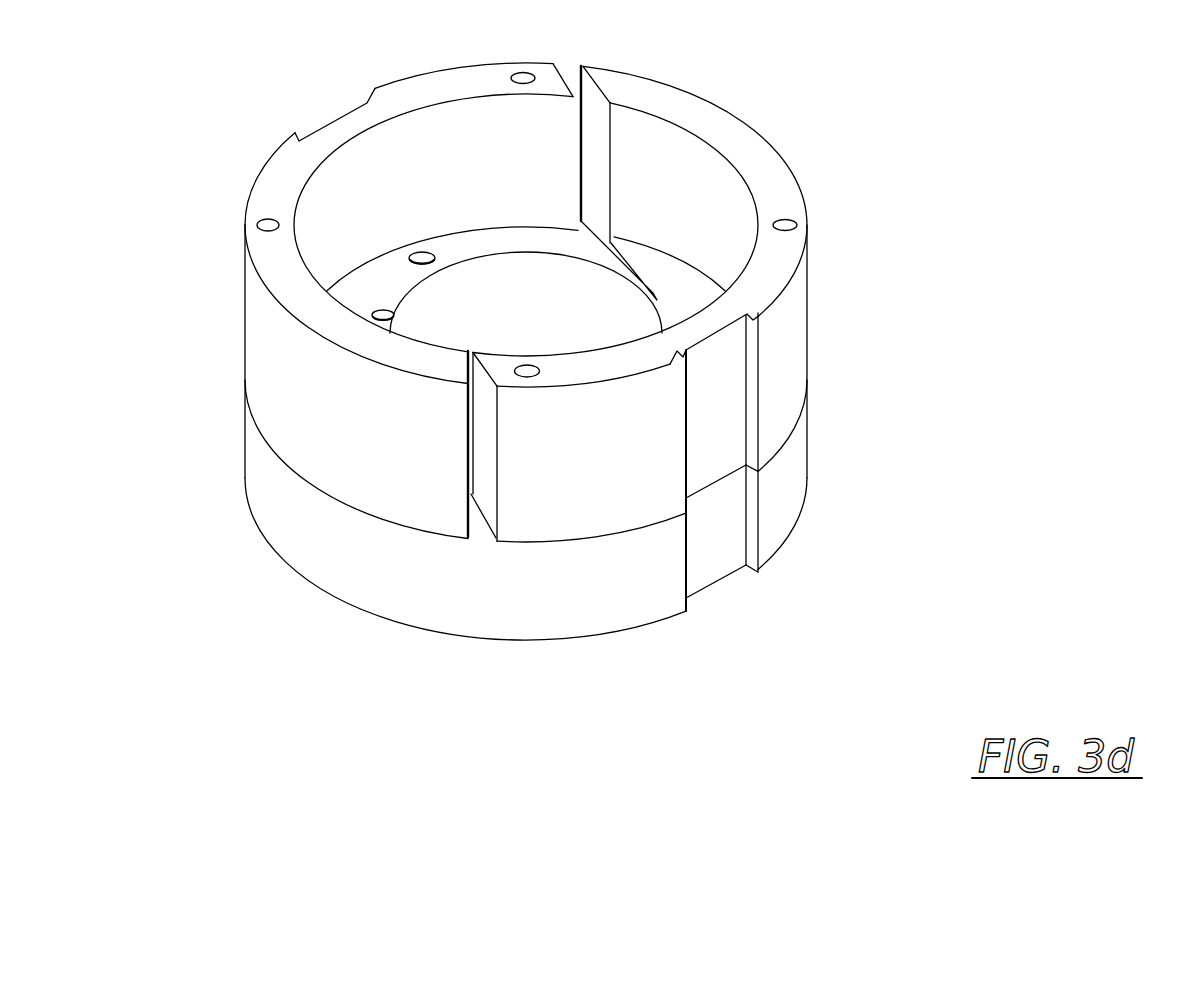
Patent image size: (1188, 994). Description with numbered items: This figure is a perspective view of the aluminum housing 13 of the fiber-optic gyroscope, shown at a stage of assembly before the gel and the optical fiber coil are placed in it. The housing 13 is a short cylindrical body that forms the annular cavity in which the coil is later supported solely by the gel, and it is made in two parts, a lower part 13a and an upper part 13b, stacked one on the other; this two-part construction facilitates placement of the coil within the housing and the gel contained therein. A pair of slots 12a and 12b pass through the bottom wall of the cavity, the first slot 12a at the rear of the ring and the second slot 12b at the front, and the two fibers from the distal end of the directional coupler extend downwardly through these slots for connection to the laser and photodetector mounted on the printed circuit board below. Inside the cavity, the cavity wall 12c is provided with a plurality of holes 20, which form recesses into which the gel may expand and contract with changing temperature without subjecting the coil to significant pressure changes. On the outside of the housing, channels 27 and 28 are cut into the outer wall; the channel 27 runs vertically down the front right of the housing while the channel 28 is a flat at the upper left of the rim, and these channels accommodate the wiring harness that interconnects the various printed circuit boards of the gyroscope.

The housing 13 is at (208, 333).
The housing part 13a is at (810, 440).
The housing part 13b is at (750, 128).
The slot 12a is at (623, 258).
The slot 12b is at (470, 358).
The cavity wall 12c is at (487, 248).
The holes 20 is at (385, 310).
The channel 27 is at (715, 560).
The channel 28 is at (322, 120).